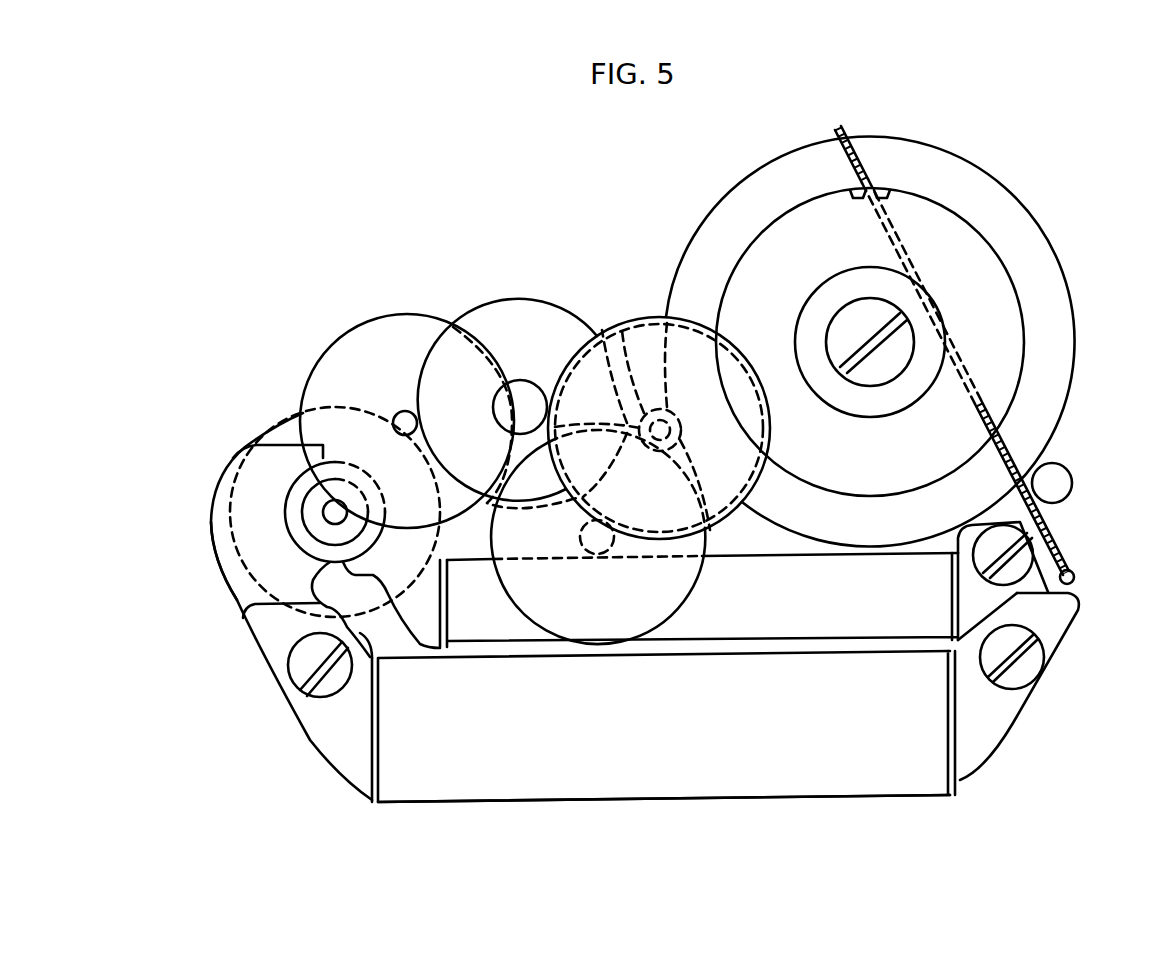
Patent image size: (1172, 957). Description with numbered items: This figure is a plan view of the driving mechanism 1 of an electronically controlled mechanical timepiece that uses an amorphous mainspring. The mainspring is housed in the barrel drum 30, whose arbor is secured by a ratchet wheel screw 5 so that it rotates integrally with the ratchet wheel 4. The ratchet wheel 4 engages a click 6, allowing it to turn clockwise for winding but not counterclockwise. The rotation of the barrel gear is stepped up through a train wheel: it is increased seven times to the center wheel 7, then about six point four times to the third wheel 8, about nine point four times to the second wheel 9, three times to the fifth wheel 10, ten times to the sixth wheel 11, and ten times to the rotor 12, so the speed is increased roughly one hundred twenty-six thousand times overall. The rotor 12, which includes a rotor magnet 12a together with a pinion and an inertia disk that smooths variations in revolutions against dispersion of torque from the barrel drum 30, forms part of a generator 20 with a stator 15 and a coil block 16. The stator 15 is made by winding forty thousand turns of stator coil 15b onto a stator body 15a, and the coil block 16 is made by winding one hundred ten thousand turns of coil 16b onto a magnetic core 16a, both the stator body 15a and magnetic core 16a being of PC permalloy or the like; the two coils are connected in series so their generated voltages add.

The driving mechanism 1 is at (166, 252).
The ratchet wheel 4 is at (998, 305).
The ratchet wheel screw 5 is at (897, 365).
The click 6 is at (862, 160).
The center wheel 7 is at (633, 323).
The third wheel 8 is at (670, 623).
The second wheel 9 is at (582, 328).
The fifth wheel 10 is at (525, 298).
The sixth wheel 11 is at (390, 315).
The rotor 12 is at (270, 423).
The rotor magnet 12a is at (330, 508).
The stator 15 is at (867, 630).
The stator body 15a is at (237, 590).
The stator coil 15b is at (927, 623).
The coil block 16 is at (435, 794).
The magnetic core 16a is at (333, 763).
The coil 16b is at (523, 792).
The generator 20 is at (208, 544).
The barrel drum 30 is at (1007, 207).